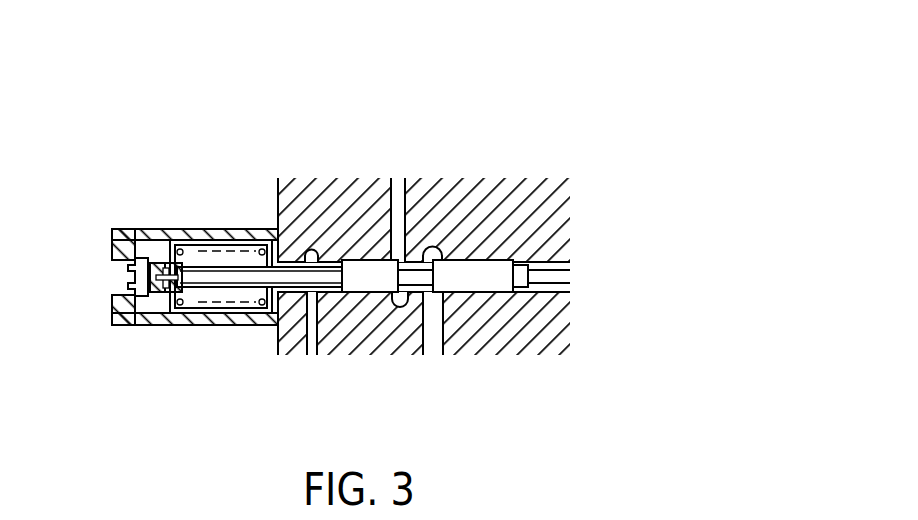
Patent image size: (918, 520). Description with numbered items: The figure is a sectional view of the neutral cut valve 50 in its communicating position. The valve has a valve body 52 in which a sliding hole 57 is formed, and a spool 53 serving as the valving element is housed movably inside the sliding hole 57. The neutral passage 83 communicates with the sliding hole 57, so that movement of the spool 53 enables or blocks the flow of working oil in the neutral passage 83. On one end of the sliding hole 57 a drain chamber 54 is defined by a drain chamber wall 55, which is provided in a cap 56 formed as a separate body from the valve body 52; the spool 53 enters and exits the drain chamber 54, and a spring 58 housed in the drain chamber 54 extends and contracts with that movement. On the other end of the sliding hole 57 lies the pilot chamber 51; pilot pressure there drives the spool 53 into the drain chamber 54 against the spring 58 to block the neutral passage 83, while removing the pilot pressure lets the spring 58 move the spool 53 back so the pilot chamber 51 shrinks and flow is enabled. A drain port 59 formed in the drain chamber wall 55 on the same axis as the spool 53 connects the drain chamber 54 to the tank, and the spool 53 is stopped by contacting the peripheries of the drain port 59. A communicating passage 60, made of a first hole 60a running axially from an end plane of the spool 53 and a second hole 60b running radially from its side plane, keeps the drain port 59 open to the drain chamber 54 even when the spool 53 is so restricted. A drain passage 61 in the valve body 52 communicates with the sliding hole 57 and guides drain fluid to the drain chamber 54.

The neutral cut valve 50 is at (181, 79).
The pilot chamber 51 is at (520, 292).
The valve body 52 is at (543, 193).
The spool 53 is at (362, 268).
The drain chamber 54 is at (203, 263).
The drain chamber wall 55 is at (114, 262).
The cap 56 is at (112, 230).
The sliding hole 57 is at (370, 280).
The spring 58 is at (248, 304).
The drain port 59 is at (118, 270).
The communicating passage 60 is at (120, 346).
The first hole 60a is at (152, 290).
The second hole 60b is at (172, 290).
The drain passage 61 is at (325, 352).
The neutral passage 83 is at (401, 240).